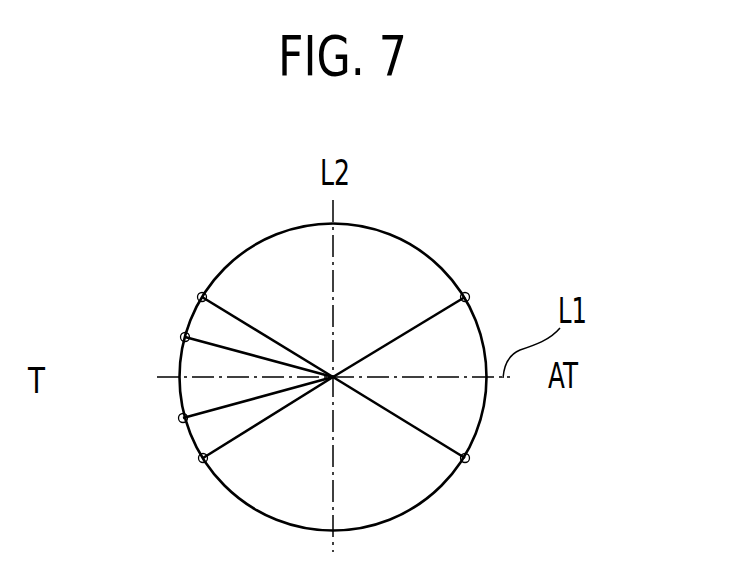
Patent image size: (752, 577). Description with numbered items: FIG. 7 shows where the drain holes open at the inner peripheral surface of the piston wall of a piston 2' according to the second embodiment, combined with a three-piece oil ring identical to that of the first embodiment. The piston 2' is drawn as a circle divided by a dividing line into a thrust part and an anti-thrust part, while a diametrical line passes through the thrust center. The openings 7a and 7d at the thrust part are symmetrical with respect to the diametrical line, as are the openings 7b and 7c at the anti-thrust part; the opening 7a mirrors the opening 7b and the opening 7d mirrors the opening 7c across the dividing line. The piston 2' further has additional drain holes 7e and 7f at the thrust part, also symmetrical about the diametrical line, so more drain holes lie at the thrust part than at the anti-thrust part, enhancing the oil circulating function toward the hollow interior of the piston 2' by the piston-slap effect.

The piston 2' is at (438, 349).
The opening 7a is at (202, 297).
The opening 7b is at (465, 297).
The opening 7c is at (465, 458).
The opening 7d is at (203, 458).
The drain hole 7e is at (185, 337).
The drain hole 7f is at (183, 418).